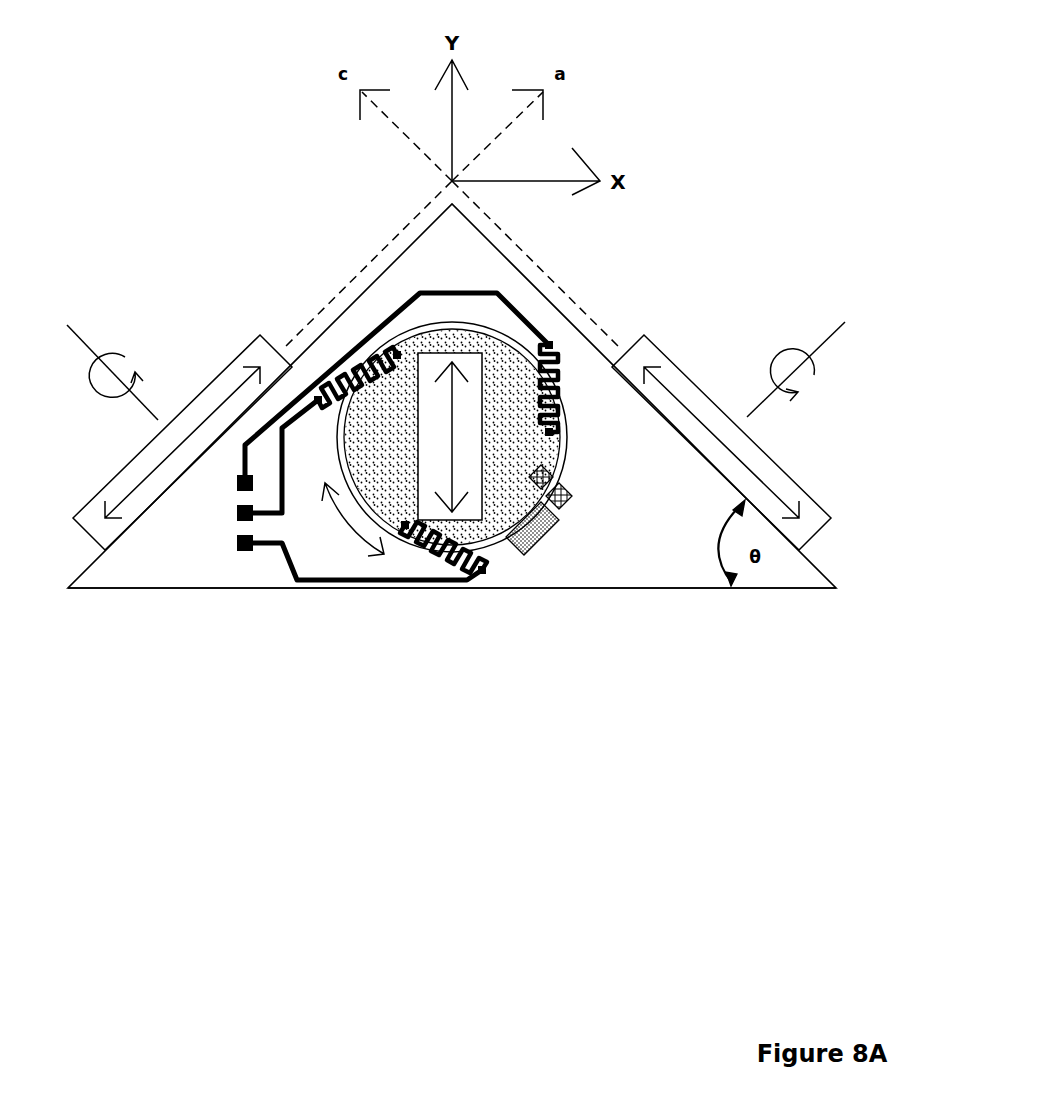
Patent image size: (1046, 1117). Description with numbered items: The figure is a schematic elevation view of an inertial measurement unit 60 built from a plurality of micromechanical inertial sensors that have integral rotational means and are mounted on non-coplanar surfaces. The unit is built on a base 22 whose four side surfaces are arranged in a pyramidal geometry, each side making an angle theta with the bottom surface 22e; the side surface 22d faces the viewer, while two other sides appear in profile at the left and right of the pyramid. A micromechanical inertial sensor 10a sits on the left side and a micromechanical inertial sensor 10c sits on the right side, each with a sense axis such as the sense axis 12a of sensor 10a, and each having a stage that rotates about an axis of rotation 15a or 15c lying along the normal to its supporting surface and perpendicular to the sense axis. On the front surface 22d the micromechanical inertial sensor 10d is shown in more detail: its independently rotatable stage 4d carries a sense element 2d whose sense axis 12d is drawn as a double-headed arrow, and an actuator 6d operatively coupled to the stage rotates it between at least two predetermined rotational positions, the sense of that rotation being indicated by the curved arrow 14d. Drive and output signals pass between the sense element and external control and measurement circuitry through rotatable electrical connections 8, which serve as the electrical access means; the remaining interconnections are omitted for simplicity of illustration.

The inertial measurement unit 60 is at (757, 118).
The base 22 is at (125, 590).
The bottom surface 22e is at (240, 590).
The side surface 22d is at (610, 555).
The micromechanical inertial sensor 10a is at (205, 373).
The sense axis 12a is at (228, 400).
The axis of rotation 15a is at (63, 327).
The micromechanical inertial sensor 10c is at (690, 378).
The axis of rotation 15c is at (831, 330).
The rotatable stage 4d is at (452, 437).
The sense element 2d is at (433, 403).
The sense axis 12d is at (452, 433).
The micromechanical inertial sensor 10d is at (452, 316).
The rotatable electrical connections 8 is at (435, 552).
The rotation direction arrow 14d is at (353, 533).
The actuator 6d is at (540, 527).